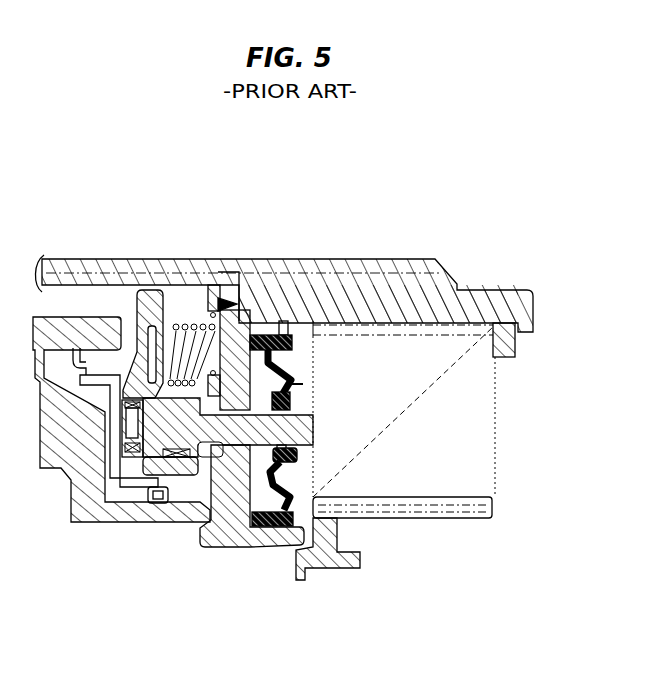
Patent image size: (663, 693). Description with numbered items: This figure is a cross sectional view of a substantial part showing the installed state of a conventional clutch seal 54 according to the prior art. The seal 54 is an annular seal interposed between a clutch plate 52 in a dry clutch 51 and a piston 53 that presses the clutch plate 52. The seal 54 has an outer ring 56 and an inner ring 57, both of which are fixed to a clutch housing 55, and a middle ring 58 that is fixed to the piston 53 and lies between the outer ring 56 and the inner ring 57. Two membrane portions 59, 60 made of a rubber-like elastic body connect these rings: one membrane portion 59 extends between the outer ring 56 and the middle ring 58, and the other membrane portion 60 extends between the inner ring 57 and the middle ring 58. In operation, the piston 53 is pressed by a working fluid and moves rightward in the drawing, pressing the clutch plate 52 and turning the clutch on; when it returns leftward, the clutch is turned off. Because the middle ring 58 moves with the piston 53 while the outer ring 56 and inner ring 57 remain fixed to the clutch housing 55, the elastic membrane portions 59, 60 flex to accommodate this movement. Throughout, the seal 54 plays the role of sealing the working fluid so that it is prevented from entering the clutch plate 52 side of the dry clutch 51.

The dry clutch 51 is at (271, 259).
The clutch plate 52 is at (398, 472).
The piston 53 is at (213, 452).
The clutch seal 54 is at (305, 387).
The clutch housing 55 is at (233, 309).
The outer ring 56 is at (282, 322).
The inner ring 57 is at (273, 548).
The middle ring 58 is at (313, 330).
The membrane portion 59 is at (300, 375).
The membrane portion 60 is at (346, 478).